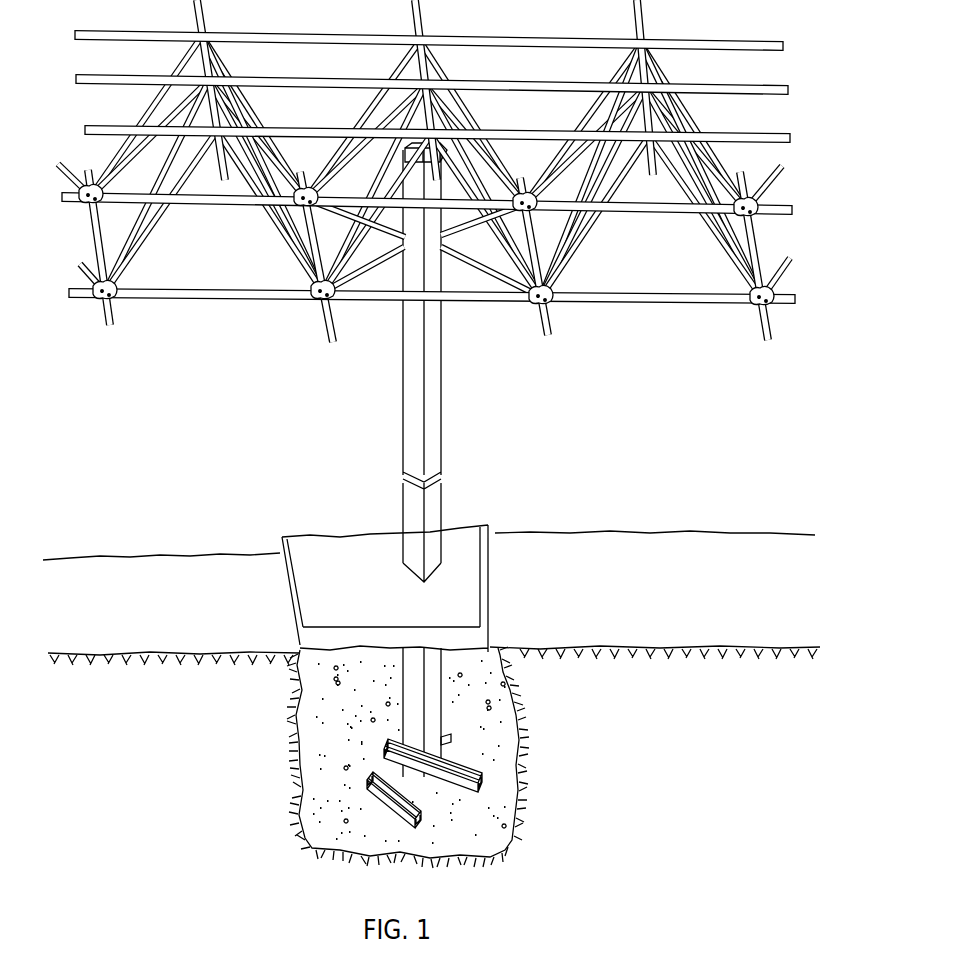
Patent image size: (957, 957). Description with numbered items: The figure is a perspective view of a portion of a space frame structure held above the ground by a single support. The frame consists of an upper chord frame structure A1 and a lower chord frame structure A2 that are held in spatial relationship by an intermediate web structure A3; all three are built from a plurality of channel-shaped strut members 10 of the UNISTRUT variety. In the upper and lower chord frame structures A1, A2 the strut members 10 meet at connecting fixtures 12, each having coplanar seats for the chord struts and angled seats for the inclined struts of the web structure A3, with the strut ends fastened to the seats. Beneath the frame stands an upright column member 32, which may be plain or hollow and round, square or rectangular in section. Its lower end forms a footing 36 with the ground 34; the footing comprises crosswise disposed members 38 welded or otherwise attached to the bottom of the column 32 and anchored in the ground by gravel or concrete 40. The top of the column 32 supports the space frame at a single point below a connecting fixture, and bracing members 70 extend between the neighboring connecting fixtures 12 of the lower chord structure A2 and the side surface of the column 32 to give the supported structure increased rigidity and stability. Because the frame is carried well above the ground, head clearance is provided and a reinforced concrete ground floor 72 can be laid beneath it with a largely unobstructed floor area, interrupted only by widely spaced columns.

The strut member 10 is at (276, 30).
The connecting fixture 12 is at (642, 156).
The upright column member 32 is at (444, 508).
The ground 34 is at (696, 548).
The footing 36 is at (528, 720).
The crosswise disposed members 38 is at (395, 757).
The gravel or concrete anchoring 40 is at (312, 769).
The bracing member 70 is at (366, 250).
The ground floor 72 is at (358, 556).
The upper chord frame structure A1 is at (198, 54).
The lower chord frame structure A2 is at (96, 250).
The intermediate web structure A3 is at (364, 108).